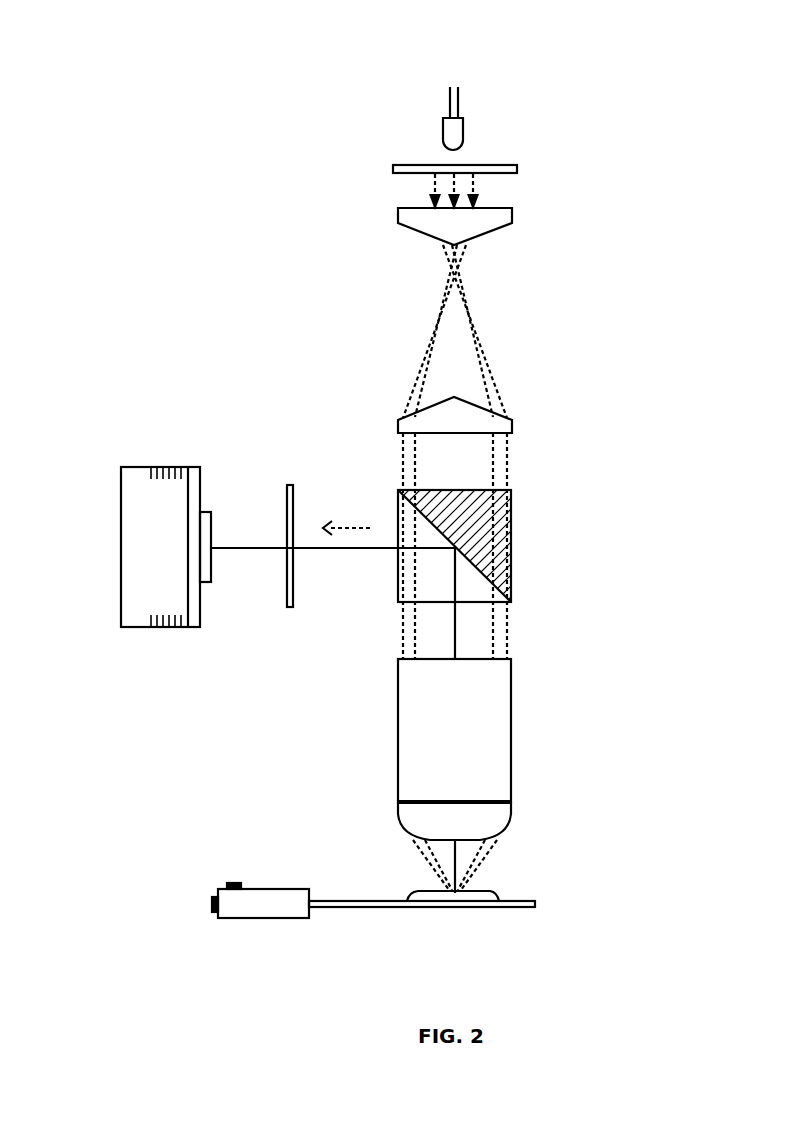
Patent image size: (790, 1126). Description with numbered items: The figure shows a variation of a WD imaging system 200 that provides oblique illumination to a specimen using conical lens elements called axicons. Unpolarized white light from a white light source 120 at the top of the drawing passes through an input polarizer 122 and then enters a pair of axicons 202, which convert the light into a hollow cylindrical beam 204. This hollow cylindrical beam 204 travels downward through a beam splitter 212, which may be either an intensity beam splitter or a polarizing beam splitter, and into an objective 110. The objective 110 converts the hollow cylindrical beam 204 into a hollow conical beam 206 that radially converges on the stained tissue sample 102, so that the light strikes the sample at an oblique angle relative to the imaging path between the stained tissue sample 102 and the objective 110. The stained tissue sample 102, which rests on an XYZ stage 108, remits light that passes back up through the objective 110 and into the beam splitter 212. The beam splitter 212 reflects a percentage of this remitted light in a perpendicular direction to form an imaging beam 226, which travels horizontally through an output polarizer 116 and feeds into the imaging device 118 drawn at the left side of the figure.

The imaging system 200 is at (218, 342).
The white light source 120 is at (455, 82).
The input polarizer 122 is at (520, 184).
The axicons 202 is at (512, 223).
The hollow cylindrical beam 204 is at (493, 612).
The beam splitter 212 is at (522, 546).
The output polarizer 116 is at (292, 509).
The imaging beam 226 is at (346, 515).
The imaging device 118 is at (113, 547).
The objective 110 is at (515, 749).
The hollow conical beam 206 is at (443, 888).
The stained tissue sample 102 is at (482, 891).
The XYZ stage 108 is at (373, 935).